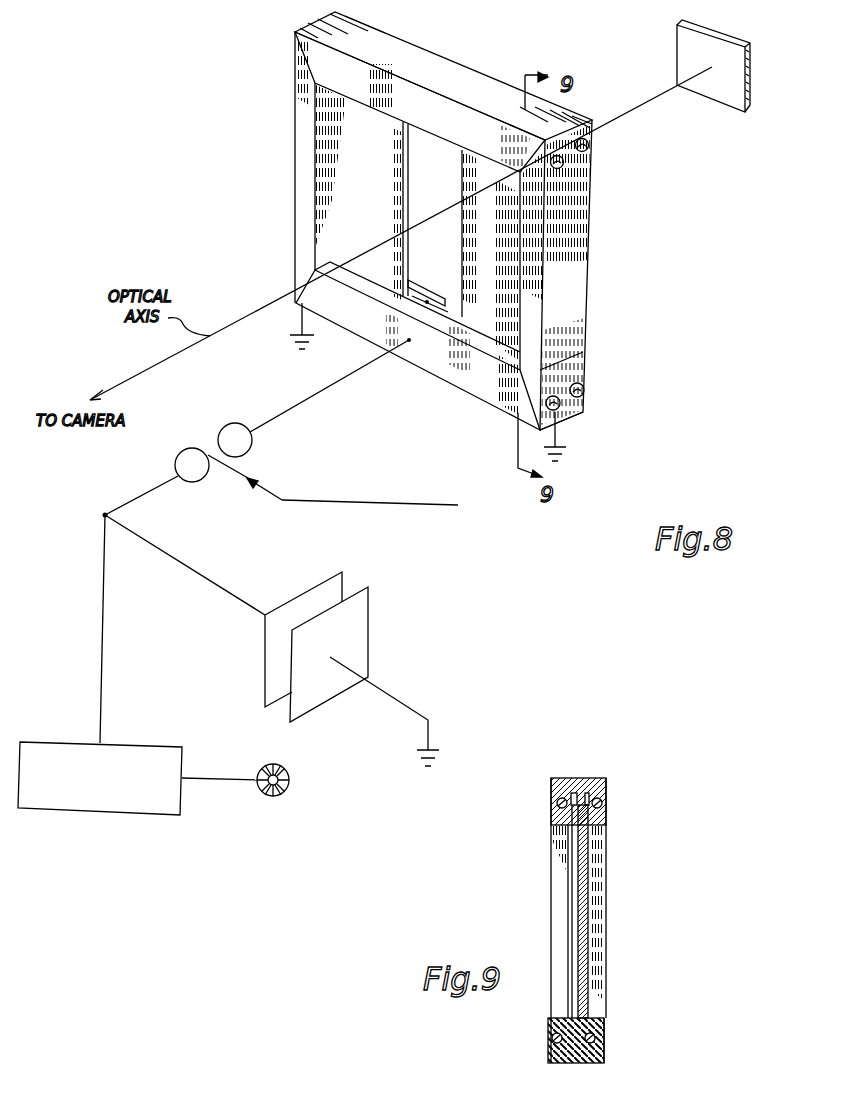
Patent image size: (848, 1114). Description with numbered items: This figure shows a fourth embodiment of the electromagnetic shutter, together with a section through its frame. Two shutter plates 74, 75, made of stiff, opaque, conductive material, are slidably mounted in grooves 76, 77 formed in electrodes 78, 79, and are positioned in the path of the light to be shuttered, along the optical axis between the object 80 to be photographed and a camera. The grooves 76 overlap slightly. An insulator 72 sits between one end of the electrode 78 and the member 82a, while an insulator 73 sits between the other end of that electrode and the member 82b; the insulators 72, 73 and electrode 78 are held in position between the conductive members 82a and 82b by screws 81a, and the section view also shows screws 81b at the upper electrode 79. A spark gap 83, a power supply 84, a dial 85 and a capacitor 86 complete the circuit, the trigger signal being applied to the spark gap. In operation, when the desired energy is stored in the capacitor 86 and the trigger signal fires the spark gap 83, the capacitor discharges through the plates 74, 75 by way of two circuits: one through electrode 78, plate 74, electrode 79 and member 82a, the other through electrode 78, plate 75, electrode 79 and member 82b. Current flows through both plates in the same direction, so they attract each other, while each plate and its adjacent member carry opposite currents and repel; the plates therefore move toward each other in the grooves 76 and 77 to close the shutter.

In FIG. 8, the insulator 72 is at (305, 318).
In FIG. 8, the insulator 73 is at (519, 422).
In FIG. 9, the insulator 73 is at (604, 1030).
In FIG. 8, the shutter plate 74 is at (404, 180).
In FIG. 9, the shutter plate 74 is at (568, 874).
In FIG. 8, the shutter plate 75 is at (462, 192).
In FIG. 9, the shutter plate 75 is at (594, 902).
In FIG. 8, the groove 76 is at (410, 284).
In FIG. 9, the groove 77 is at (588, 793).
In FIG. 8, the electrode 78 is at (437, 375).
In FIG. 8, the electrode 79 is at (448, 60).
In FIG. 9, the electrode 79 is at (606, 794).
In FIG. 8, the object 80 is at (724, 118).
In FIG. 8, the screws 81a is at (561, 410).
In FIG. 9, the screws 81a is at (588, 1078).
In FIG. 8, the upper screws 81b is at (564, 167).
In FIG. 9, the upper screws 81b is at (557, 800).
In FIG. 8, the member 82a is at (296, 172).
In FIG. 9, the member 82a is at (551, 926).
In FIG. 8, the member 82b is at (588, 272).
In FIG. 8, the spark gap 83 is at (225, 504).
In FIG. 8, the power supply 84 is at (120, 814).
In FIG. 8, the dial 85 is at (262, 794).
In FIG. 8, the capacitor 86 is at (362, 730).